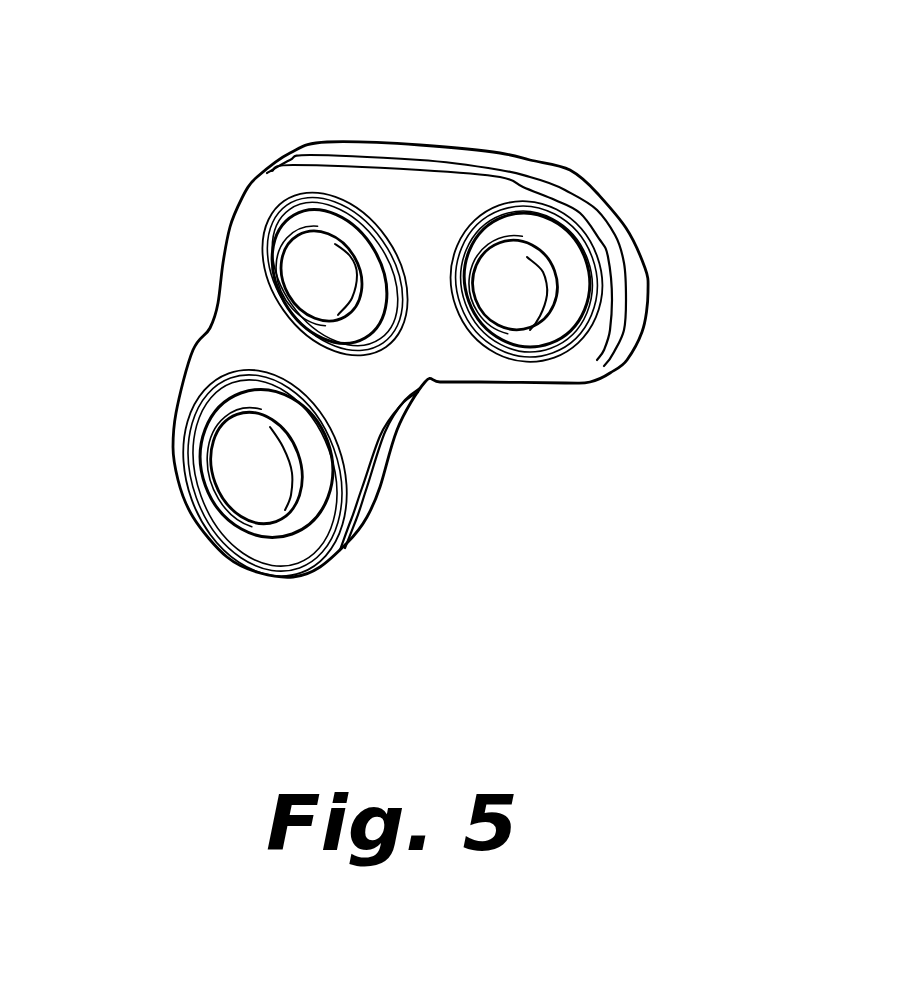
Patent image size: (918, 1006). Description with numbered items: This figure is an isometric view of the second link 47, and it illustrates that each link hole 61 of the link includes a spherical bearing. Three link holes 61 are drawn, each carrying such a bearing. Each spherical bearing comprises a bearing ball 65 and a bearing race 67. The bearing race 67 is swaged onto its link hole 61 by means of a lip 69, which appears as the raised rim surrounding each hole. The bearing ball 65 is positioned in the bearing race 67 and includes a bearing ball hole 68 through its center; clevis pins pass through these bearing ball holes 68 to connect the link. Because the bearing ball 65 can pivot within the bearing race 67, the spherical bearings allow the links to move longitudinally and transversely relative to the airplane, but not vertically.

The second link 47 is at (485, 157).
The link hole 61 is at (285, 287).
The bearing ball 65 is at (367, 247).
The bearing race 67 is at (283, 210).
The bearing ball hole 68 is at (327, 282).
The lip 69 is at (413, 217).